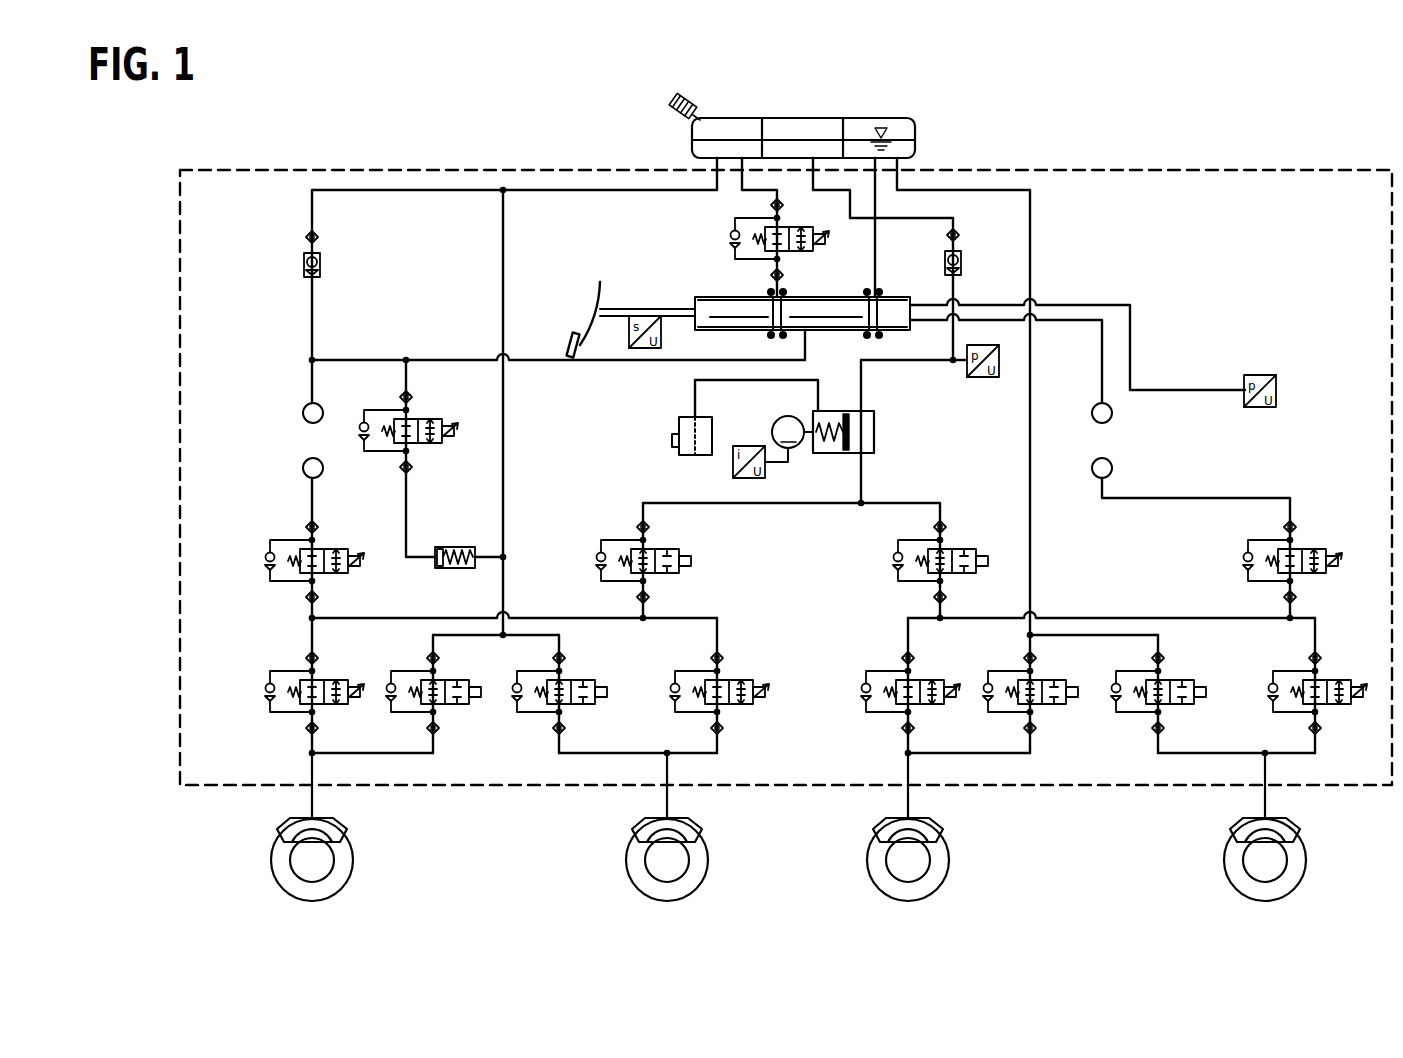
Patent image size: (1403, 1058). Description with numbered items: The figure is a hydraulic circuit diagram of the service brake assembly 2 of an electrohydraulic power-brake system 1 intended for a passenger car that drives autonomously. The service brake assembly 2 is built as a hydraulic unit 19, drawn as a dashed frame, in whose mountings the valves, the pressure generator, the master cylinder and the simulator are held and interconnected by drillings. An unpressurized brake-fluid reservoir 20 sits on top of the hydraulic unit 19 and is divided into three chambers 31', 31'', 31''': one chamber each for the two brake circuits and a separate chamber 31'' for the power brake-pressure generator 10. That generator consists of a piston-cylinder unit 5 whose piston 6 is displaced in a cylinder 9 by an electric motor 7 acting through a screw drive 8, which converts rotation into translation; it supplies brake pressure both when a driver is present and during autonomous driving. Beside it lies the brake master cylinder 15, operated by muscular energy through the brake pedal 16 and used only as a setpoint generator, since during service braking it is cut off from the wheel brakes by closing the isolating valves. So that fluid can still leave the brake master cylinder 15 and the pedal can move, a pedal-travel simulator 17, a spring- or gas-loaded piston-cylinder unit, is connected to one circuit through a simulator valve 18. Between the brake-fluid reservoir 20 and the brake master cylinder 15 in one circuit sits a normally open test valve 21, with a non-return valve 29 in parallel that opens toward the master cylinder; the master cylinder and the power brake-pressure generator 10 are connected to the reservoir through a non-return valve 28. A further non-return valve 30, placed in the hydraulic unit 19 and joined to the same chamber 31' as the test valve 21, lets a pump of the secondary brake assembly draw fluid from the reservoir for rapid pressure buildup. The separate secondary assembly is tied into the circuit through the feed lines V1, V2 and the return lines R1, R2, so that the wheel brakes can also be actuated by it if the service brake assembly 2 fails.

The electrohydraulic power-brake system 1 is at (786, 416).
The service brake assembly 2 is at (786, 416).
The piston-cylinder unit 5 is at (844, 432).
The piston 6 is at (845, 412).
The electric motor 7 is at (772, 425).
The screw drive 8 is at (824, 454).
The cylinder 9 is at (844, 432).
The power brake-pressure generator 10 is at (850, 432).
The brake master cylinder 15 is at (905, 297).
The brake pedal 16 is at (566, 340).
The pedal-travel simulator 17 is at (452, 547).
The simulator valve 18 is at (440, 428).
The hydraulic unit 19 is at (409, 168).
The brake-fluid reservoir 20 is at (823, 107).
The test valve 21 is at (800, 252).
The non-return valve 28 is at (962, 265).
The non-return valve 29 is at (763, 244).
The non-return valve 30 is at (302, 264).
The chamber 31' is at (727, 98).
The chamber 31'' is at (802, 107).
The chamber 31''' is at (882, 107).
The feed line V1 is at (302, 414).
The feed line V2 is at (1113, 414).
The return line R1 is at (302, 469).
The return line R2 is at (1113, 469).